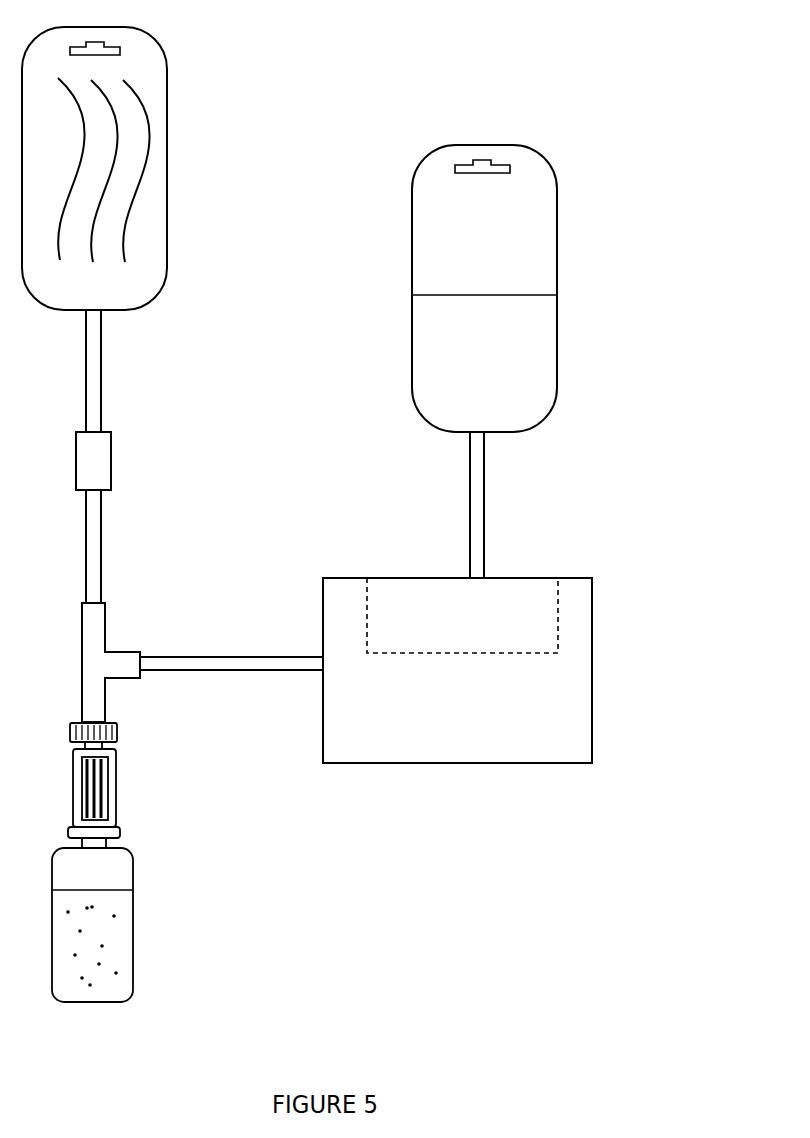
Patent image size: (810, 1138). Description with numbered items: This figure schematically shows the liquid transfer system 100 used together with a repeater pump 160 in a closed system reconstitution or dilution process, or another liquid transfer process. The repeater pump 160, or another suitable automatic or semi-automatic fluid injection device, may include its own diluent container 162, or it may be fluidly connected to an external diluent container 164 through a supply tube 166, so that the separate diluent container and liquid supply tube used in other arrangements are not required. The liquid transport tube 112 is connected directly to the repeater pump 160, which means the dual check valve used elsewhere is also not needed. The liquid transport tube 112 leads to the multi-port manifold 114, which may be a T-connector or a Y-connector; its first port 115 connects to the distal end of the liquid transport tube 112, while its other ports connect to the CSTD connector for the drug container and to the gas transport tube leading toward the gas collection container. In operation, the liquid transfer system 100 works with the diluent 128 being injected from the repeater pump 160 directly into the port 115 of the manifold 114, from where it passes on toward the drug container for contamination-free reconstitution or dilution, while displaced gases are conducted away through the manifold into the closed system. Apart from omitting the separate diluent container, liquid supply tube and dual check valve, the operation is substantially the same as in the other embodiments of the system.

The liquid transfer system 100 is at (385, 136).
The liquid transport tube 112 is at (190, 662).
The multi-port manifold 114 is at (95, 668).
The first port 115 is at (140, 672).
The diluent 128 is at (435, 368).
The repeater pump 160 is at (433, 763).
The diluent container 162 is at (490, 618).
The external diluent container 164 is at (412, 265).
The supply tube 166 is at (467, 482).